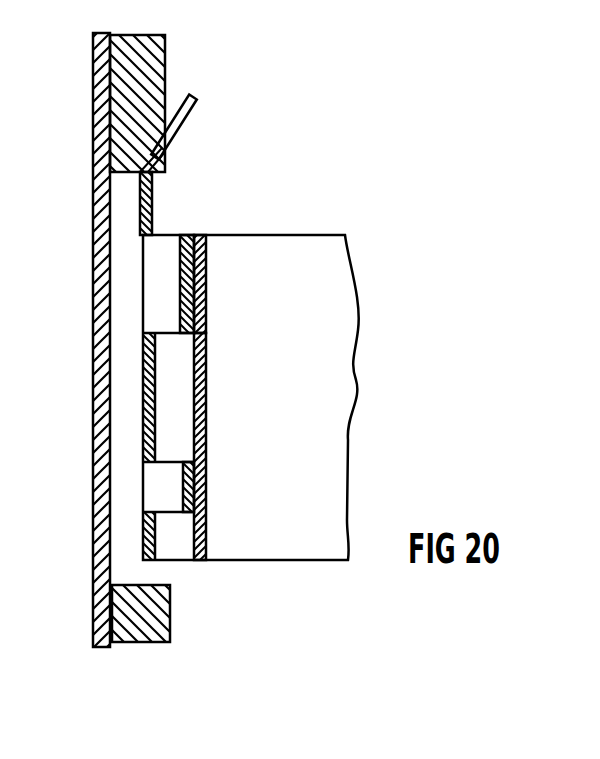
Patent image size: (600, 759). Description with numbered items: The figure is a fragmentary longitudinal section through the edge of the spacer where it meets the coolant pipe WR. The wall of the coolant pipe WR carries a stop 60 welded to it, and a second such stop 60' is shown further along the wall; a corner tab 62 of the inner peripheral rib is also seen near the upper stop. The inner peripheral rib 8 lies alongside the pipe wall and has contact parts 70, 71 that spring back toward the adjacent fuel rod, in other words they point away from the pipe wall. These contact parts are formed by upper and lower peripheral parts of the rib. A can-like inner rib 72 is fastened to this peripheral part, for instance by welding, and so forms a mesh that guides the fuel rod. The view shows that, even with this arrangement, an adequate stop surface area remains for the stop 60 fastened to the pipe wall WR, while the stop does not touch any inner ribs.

The coolant pipe WR is at (92, 212).
The stop 60 is at (158, 103).
The frame member 60' is at (172, 617).
The corner tab 62 is at (172, 127).
The inner peripheral rib 8 is at (151, 216).
The contact part 70 is at (206, 287).
The contact part 71 is at (190, 487).
The can-like inner rib 72 is at (198, 395).